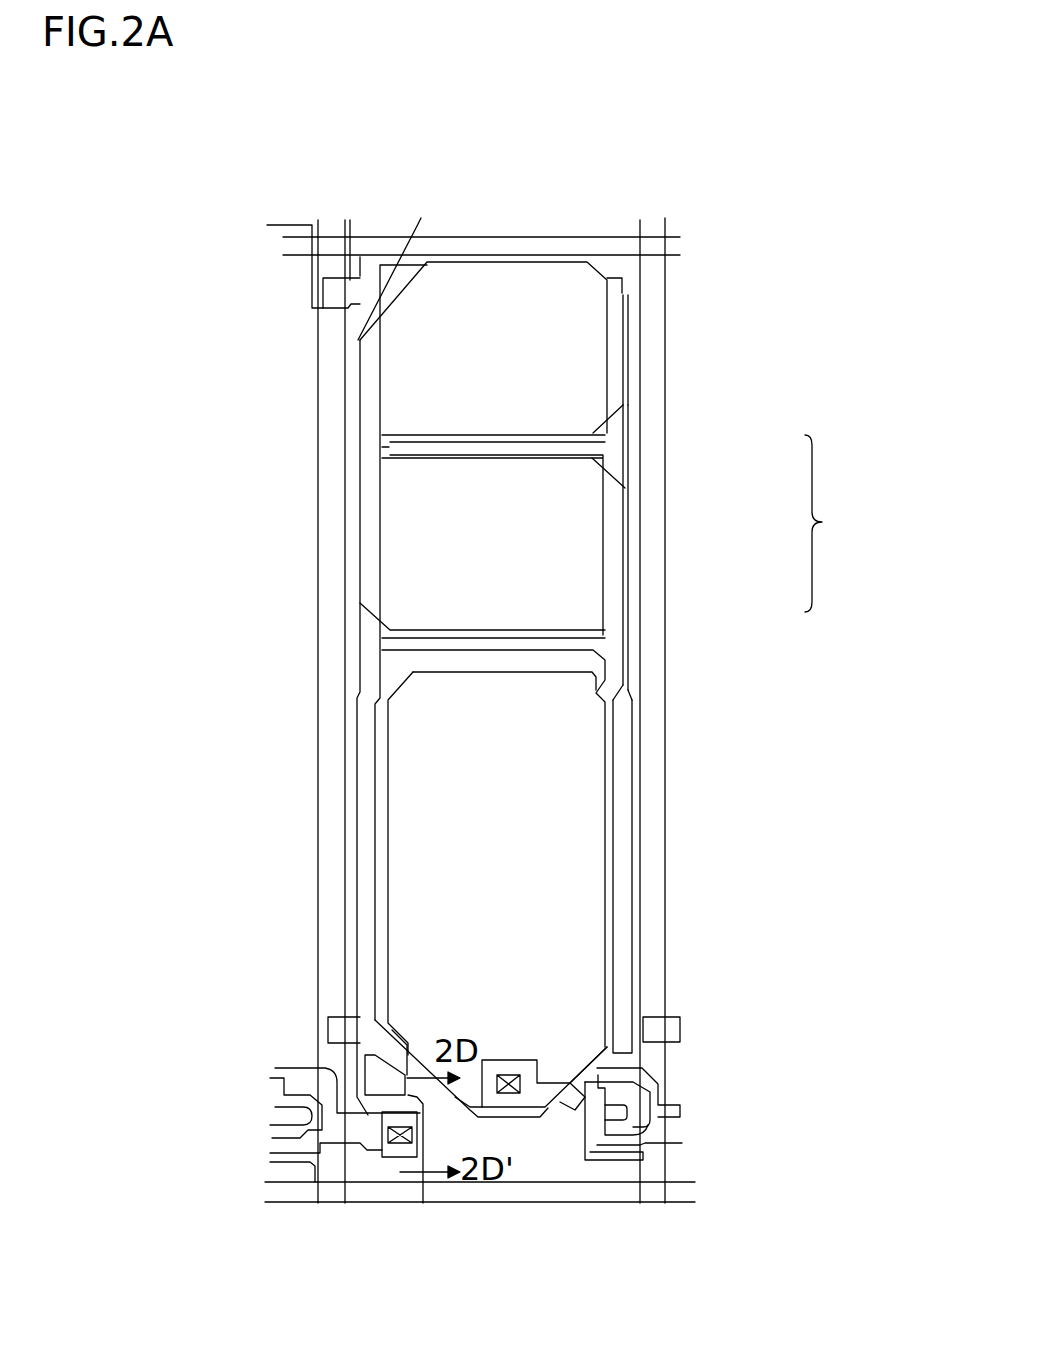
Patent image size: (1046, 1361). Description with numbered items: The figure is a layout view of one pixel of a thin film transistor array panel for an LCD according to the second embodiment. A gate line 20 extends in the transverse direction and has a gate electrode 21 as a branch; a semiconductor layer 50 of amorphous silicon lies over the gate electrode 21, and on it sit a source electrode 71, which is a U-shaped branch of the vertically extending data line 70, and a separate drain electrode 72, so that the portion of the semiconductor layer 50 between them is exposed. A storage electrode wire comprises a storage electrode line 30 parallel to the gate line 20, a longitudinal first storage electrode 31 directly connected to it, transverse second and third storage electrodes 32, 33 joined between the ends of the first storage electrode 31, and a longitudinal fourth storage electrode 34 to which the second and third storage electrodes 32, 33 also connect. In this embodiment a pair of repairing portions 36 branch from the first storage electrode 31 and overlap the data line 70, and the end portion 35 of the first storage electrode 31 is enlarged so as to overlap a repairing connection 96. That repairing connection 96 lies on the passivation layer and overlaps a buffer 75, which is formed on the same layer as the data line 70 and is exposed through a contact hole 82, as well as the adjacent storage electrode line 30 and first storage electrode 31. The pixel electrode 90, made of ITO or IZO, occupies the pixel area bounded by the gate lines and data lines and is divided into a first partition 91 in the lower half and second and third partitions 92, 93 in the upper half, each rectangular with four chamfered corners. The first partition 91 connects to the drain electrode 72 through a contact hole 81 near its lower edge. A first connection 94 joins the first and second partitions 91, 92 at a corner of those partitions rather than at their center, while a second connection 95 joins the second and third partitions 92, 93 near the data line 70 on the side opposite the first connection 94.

The gate line 20 is at (520, 1150).
The gate electrode 21 is at (660, 1112).
The storage electrode line 30 is at (540, 237).
The first storage electrode 31 is at (355, 720).
The second storage electrode 32 is at (485, 440).
The third storage electrode 33 is at (485, 640).
The fourth storage electrode 34 is at (643, 748).
The end portion of the first storage electrode 35 is at (395, 1050).
The repairing portion 36 is at (323, 292).
The semiconductor layer 50 is at (673, 1086).
The data line 70 is at (318, 822).
The source electrode 71 is at (645, 1068).
The drain electrode 72 is at (556, 1110).
The buffer 75 is at (317, 1124).
The contact hole 81 is at (508, 1062).
The contact hole 82 is at (377, 1140).
The pixel electrode 90 is at (840, 523).
The first partition 91 is at (607, 726).
The second partition 92 is at (628, 533).
The third partition 93 is at (628, 400).
The first connection 94 is at (630, 662).
The second connection 95 is at (382, 447).
The repairing connection 96 is at (400, 1158).